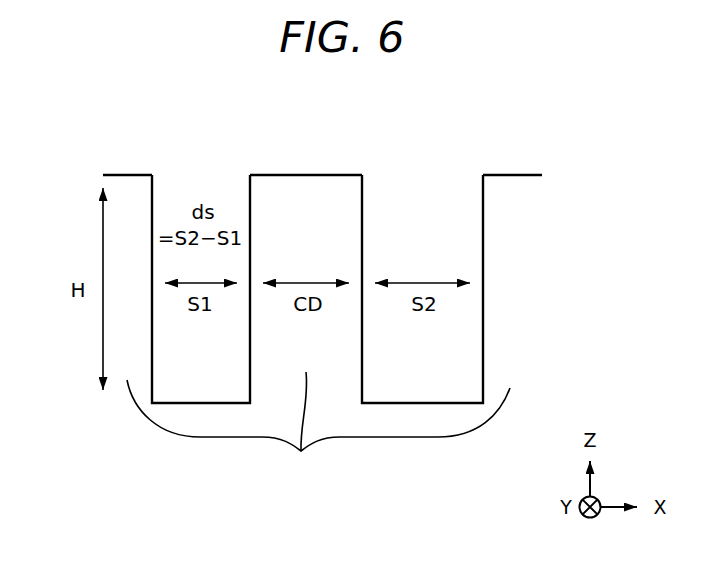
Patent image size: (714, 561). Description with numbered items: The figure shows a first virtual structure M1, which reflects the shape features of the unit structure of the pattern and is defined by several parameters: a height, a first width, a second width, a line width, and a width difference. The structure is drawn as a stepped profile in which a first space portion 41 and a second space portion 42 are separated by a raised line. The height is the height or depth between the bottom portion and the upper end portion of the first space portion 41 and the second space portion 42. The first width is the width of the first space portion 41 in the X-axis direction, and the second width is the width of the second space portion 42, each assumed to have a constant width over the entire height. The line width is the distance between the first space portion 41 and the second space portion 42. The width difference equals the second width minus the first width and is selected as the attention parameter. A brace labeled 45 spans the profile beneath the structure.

The first virtual structure M1 is at (56, 128).
The first space portion 41 is at (195, 168).
The second space portion 42 is at (422, 168).
The line patterns 45 is at (318, 427).